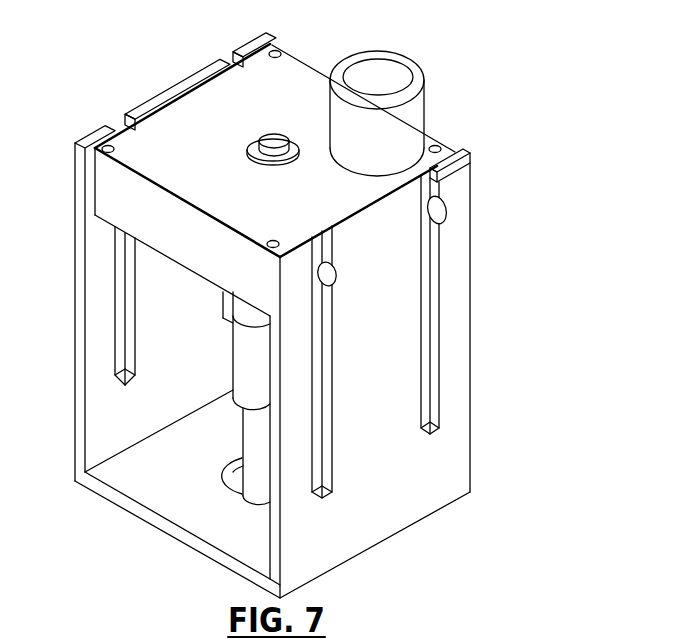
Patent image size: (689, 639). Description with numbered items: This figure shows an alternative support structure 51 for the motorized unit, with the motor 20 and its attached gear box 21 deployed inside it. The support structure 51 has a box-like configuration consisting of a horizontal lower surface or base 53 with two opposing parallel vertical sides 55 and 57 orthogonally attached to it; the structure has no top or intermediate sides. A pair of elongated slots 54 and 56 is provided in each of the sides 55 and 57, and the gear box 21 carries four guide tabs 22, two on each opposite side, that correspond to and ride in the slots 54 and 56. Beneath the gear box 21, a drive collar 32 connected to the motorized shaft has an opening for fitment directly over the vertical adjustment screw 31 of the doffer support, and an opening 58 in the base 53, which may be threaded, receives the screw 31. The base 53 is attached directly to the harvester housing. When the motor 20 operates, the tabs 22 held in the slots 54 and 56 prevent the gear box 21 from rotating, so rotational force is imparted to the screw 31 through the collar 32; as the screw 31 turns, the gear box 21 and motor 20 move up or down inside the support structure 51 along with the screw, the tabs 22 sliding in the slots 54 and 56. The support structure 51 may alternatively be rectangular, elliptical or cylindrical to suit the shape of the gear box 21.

The motor 20 is at (403, 118).
The gear box 21 is at (290, 80).
The guide tabs 22 is at (441, 214).
The vertical adjustment screw 31 is at (253, 440).
The drive collar 32 is at (253, 375).
The support structure 51 is at (333, 311).
The base 53 is at (142, 483).
The elongated slot 54 is at (128, 306).
The vertical side 55 is at (106, 418).
The elongated slot 56 is at (230, 60).
The vertical side 57 is at (390, 513).
The opening 58 is at (225, 470).